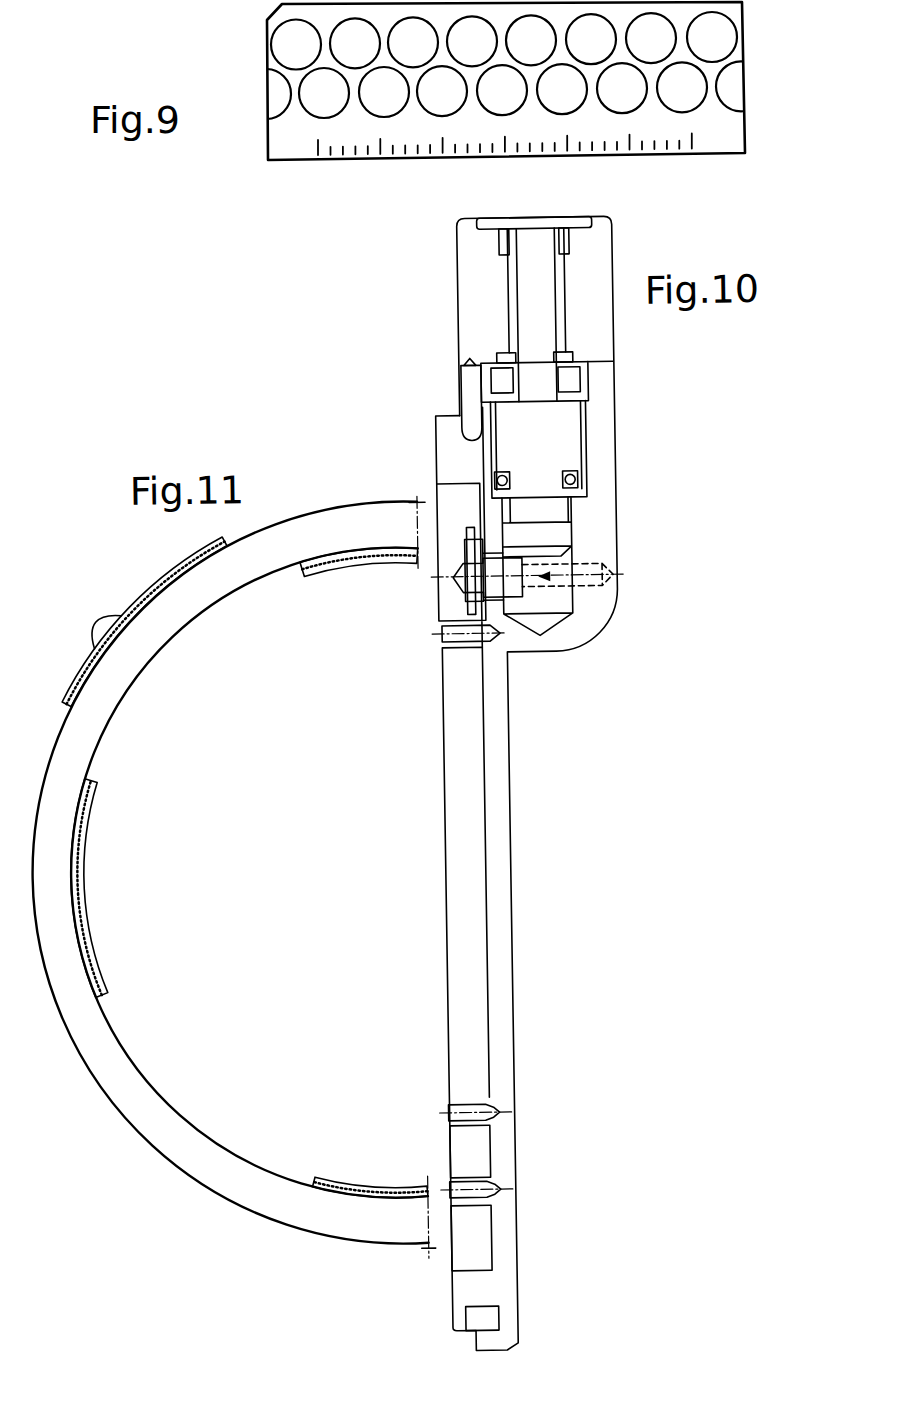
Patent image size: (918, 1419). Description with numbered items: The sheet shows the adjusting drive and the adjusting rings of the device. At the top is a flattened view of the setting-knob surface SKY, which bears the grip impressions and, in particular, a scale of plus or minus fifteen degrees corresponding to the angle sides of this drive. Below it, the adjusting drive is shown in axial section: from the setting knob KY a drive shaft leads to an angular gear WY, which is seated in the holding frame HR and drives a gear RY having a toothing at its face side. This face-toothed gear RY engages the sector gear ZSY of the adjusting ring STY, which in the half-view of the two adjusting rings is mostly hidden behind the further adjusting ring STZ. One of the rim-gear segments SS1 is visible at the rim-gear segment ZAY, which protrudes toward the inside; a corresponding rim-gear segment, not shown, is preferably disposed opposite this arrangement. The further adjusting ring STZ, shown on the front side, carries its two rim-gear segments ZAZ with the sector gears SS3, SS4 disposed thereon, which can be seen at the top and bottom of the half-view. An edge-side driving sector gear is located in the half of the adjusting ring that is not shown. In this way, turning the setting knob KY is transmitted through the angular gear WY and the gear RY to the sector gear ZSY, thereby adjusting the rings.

In FIG. 9, the setting-knob surface SKY is at (716, 138).
In FIG. 10, the setting knob KY is at (481, 310).
In FIG. 10, the angular gear WY is at (548, 577).
In FIG. 10, the gear RY is at (485, 613).
In FIG. 10, the holding frame HR is at (493, 778).
In FIG. 10, the rim-gear segments ZAZ is at (406, 1176).
In FIG. 11, the rim-gear segments ZAZ is at (396, 561).
In FIG. 11, the further adjusting ring STZ is at (111, 1071).
In FIG. 11, the sector gear SS3 is at (300, 575).
In FIG. 11, the sector gear SS4 is at (302, 1177).
In FIG. 11, the sector gear ZSY is at (95, 652).
In FIG. 11, the adjusting ring STY is at (139, 887).
In FIG. 11, the rim-gear segment SS1 is at (139, 887).
In FIG. 11, the rim-gear segment ZAY is at (91, 927).